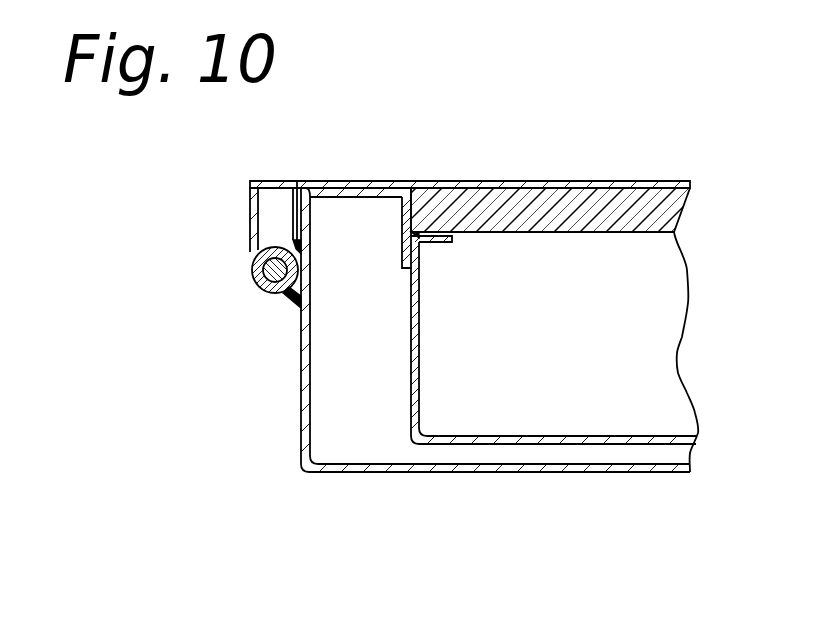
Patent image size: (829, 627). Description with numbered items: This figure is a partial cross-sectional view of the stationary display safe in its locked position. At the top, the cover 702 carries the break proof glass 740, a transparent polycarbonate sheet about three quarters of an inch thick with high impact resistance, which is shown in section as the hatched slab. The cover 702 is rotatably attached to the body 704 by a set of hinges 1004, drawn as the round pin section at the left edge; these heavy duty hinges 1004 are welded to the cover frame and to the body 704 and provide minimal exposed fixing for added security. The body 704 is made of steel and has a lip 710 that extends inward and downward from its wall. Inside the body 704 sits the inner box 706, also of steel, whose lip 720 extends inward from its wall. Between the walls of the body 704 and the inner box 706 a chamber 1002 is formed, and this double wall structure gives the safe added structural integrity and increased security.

The cover 702 is at (270, 180).
The body 704 is at (497, 467).
The inner box 706 is at (440, 443).
The lip 710 is at (403, 258).
The lip 720 is at (435, 238).
The break proof glass 740 is at (637, 207).
The chamber 1002 is at (347, 437).
The hinges 1004 is at (265, 278).